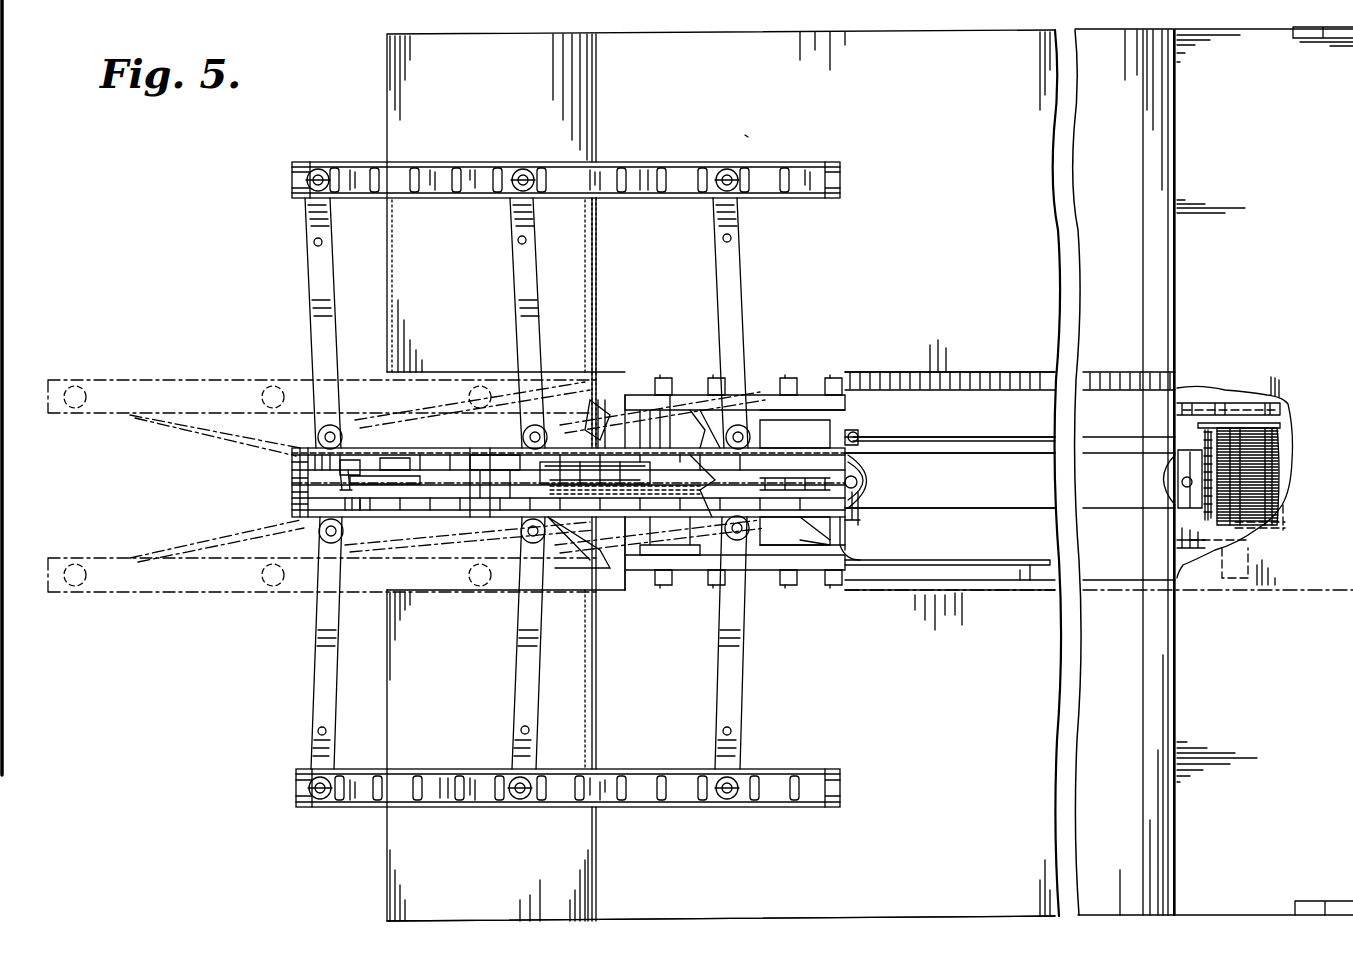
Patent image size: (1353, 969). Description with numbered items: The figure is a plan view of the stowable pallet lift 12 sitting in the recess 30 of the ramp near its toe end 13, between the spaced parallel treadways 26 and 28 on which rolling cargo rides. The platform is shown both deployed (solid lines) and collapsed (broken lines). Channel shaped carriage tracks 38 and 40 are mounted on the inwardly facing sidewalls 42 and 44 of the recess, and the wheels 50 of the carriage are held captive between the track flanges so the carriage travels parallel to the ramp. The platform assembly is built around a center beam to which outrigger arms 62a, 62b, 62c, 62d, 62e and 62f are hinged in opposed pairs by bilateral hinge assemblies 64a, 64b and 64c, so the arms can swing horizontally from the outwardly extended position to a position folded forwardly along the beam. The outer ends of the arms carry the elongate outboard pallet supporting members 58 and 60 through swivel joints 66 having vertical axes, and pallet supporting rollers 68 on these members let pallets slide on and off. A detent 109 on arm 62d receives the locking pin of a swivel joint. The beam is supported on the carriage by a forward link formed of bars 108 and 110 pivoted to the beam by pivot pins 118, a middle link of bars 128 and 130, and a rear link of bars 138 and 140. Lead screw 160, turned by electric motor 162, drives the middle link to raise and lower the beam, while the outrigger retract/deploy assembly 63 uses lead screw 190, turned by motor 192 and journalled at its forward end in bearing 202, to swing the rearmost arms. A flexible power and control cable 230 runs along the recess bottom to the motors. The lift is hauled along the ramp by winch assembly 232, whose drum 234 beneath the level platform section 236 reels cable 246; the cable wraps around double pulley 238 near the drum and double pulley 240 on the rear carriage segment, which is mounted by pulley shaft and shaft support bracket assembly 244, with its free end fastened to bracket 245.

The stowable pallet lift 12 is at (762, 130).
The toe end 13 is at (387, 906).
The treadway 26 is at (721, 239).
The treadway 28 is at (721, 719).
The recess 30 is at (1010, 453).
The carriage track 38 is at (968, 372).
The carriage track 40 is at (1003, 590).
The sidewall 42 is at (925, 370).
The sidewall 44 is at (952, 600).
The wheels 50 is at (830, 378).
The outboard pallet supporting member 58 is at (180, 380).
The outboard pallet supporting member 60 is at (175, 595).
The outrigger retract/deploy assembly 63 is at (868, 545).
The bilateral hinge assembly 64a is at (292, 490).
The bilateral hinge assembly 64b is at (480, 448).
The bilateral hinge assembly 64c is at (802, 477).
The swivel joints 66 is at (318, 169).
The pallet supporting rollers 68 is at (650, 195).
The outrigger arm 62a is at (308, 305).
The outrigger arm 62b is at (518, 305).
The outrigger arm 62c is at (725, 300).
The outrigger arm 62d is at (222, 532).
The outrigger arm 62e is at (518, 692).
The outrigger arm 62f is at (625, 548).
The elongate bar 108 is at (595, 400).
The detent 109 is at (314, 242).
The elongate bar 110 is at (600, 548).
The pivot pins 118 is at (345, 485).
The bar 128 is at (650, 410).
The bar 130 is at (680, 530).
The structural bar 138 is at (840, 395).
The structural bar 140 is at (805, 545).
The lead screw 160 is at (595, 471).
The electric motor 162 is at (500, 455).
The lead screw 190 is at (795, 474).
The motor 192 is at (850, 433).
The bearing 202 is at (705, 430).
The power and control cable 230 is at (962, 560).
The winch assembly 232 is at (1156, 389).
The drum 234 is at (1258, 480).
The level platform section 236 is at (1214, 471).
The double pulley 238 is at (1168, 488).
The double pulley 240 is at (878, 482).
The pulley shaft and shaft support bracket assembly 244 is at (860, 512).
The bracket 245 is at (862, 435).
The cable 246 is at (972, 455).